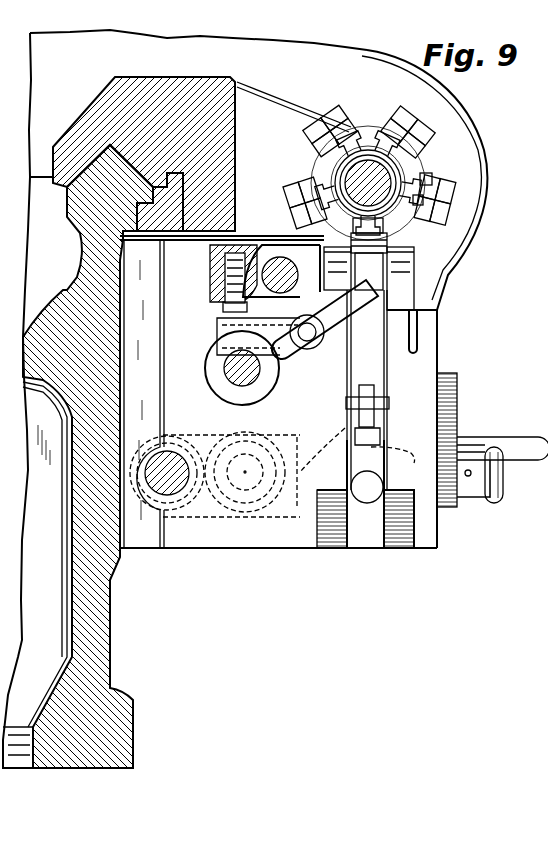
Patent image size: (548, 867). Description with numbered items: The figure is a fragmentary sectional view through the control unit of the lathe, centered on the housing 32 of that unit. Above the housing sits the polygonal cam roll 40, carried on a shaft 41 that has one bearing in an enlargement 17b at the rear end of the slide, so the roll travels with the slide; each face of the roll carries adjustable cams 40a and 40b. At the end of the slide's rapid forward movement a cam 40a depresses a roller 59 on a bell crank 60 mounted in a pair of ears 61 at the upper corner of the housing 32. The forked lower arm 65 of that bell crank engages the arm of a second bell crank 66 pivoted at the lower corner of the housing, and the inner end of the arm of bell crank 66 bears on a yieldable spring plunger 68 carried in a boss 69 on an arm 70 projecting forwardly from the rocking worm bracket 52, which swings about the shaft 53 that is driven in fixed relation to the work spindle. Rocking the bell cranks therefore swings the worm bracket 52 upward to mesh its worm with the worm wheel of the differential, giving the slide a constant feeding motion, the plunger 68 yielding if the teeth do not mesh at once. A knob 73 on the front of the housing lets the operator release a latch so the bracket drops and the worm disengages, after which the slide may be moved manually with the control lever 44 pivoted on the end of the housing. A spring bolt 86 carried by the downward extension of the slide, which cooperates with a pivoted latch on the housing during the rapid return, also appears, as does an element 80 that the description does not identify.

The enlargement 17b is at (306, 117).
The housing 32 is at (304, 543).
The cam roll 40 is at (307, 175).
The cam 40a is at (417, 190).
The cam 40b is at (451, 200).
The shaft 41 is at (368, 160).
The control lever 44 is at (513, 447).
The worm bracket 52 is at (217, 497).
The shaft 53 is at (170, 487).
The roller 59 is at (399, 233).
The bell crank 60 is at (374, 332).
The ears 61 is at (332, 263).
The forked lower arm 65 is at (360, 385).
The second bell crank 66 is at (377, 438).
The yieldable plunger 68 is at (356, 472).
The boss 69 is at (389, 453).
The arm 70 is at (324, 447).
The knob 73 is at (497, 500).
The gear 80 is at (280, 382).
The spring bolt 86 is at (233, 372).